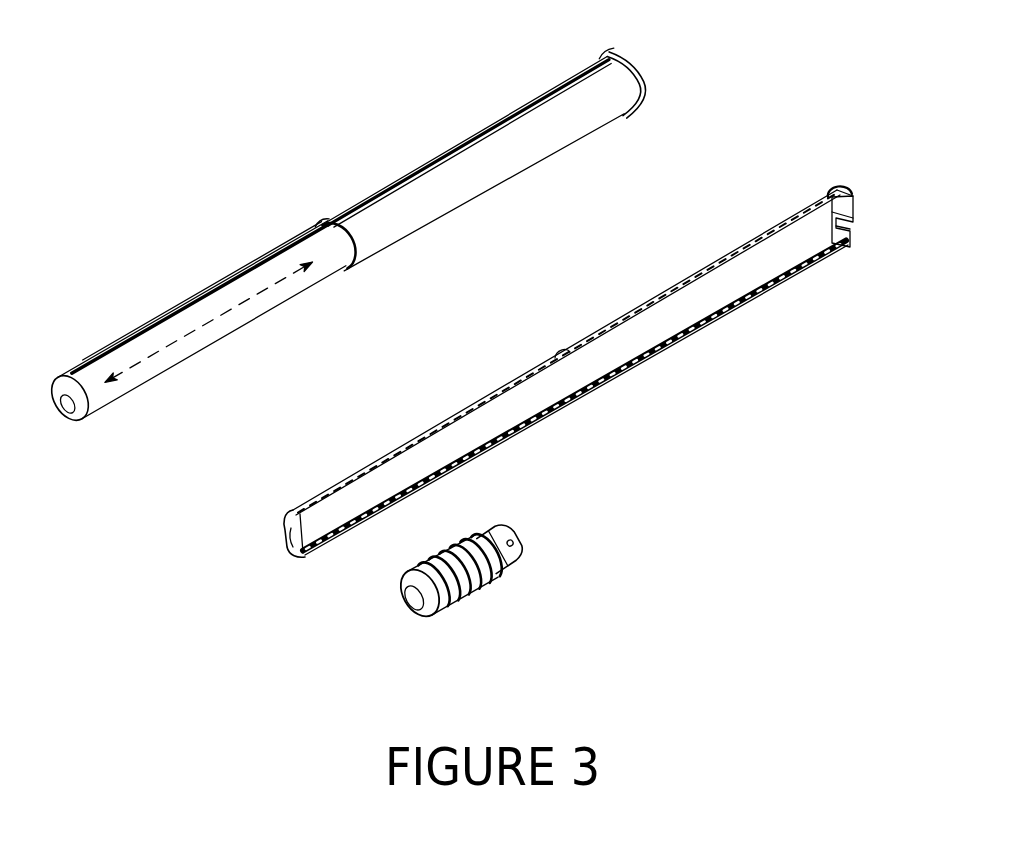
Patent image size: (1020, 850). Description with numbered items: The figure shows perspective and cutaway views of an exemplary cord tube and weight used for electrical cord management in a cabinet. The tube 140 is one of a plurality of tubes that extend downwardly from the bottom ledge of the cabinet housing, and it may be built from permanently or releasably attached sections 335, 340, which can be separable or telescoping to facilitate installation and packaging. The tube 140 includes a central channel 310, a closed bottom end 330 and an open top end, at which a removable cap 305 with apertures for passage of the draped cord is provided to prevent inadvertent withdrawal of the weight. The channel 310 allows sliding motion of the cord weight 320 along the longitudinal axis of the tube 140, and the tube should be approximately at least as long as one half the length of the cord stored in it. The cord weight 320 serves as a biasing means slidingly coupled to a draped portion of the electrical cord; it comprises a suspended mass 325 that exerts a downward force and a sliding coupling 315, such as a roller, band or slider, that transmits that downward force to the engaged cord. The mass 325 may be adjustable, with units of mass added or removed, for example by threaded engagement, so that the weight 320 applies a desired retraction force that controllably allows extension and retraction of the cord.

The tube 140 is at (427, 182).
The removable cap 305 is at (855, 203).
The central channel 310 is at (702, 305).
The sliding coupling 315 is at (508, 543).
The cord weight 320 is at (473, 605).
The suspended mass 325 is at (422, 565).
The closed bottom end 330 is at (283, 538).
The tube section 335 is at (403, 230).
The telescoping section 340 is at (133, 350).